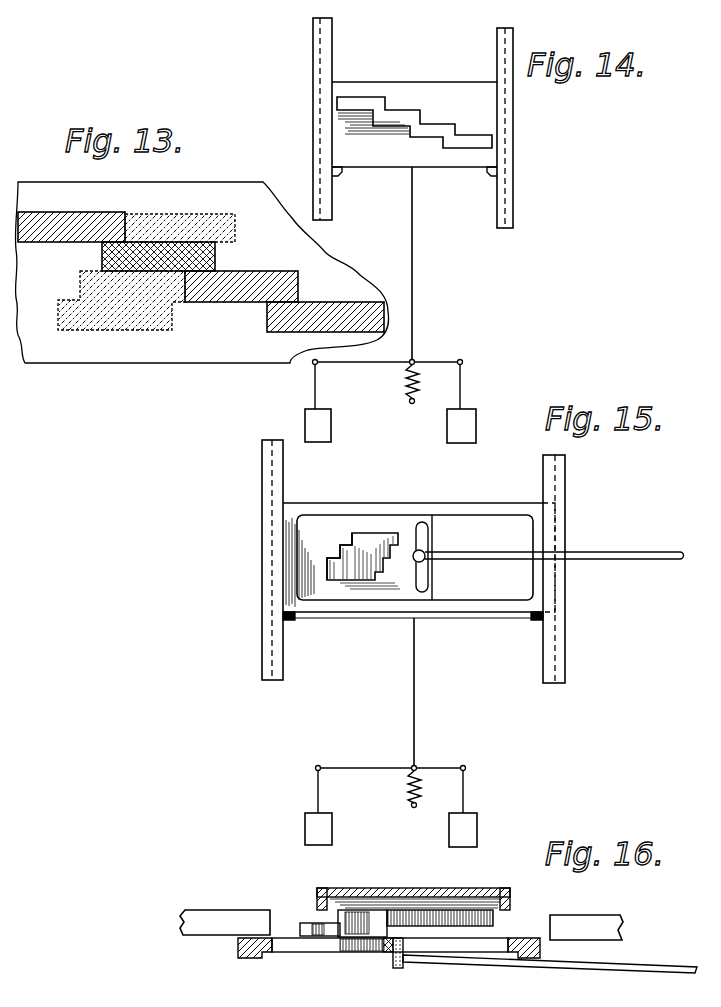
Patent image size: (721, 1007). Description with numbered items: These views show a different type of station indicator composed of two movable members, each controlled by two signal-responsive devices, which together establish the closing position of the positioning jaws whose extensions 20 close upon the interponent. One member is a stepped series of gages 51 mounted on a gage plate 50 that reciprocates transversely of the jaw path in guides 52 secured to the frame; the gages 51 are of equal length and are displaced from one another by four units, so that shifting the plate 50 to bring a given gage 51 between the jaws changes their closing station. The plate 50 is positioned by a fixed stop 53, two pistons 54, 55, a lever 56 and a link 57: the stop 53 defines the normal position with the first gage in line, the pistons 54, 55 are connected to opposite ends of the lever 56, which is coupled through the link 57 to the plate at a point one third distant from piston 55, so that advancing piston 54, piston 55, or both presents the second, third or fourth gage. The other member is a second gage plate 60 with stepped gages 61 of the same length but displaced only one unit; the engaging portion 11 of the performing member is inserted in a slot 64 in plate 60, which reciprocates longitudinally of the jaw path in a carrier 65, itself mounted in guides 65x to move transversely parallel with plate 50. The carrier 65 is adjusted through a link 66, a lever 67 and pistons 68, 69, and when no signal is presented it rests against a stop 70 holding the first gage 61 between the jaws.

In FIG. 15, the engaging portion 11 is at (430, 554).
In FIG. 16, the engaging portion 11 is at (391, 960).
In FIG. 16, the extensions of the positioning jaws 20 is at (224, 906).
In FIG. 14, the gage plate 50 is at (455, 78).
In FIG. 16, the gage plate 50 is at (480, 900).
In FIG. 13, the stepped gages 51 is at (283, 270).
In FIG. 14, the stepped gages 51 is at (412, 125).
In FIG. 16, the stepped gages 51 is at (488, 920).
In FIG. 14, the guides 52 is at (316, 58).
In FIG. 16, the guides 52 is at (315, 901).
In FIG. 14, the fixed stop 53 is at (338, 170).
In FIG. 14, the piston 54 is at (326, 432).
In FIG. 14, the piston 55 is at (465, 436).
In FIG. 14, the lever 56 is at (368, 364).
In FIG. 14, the link 57 is at (414, 290).
In FIG. 15, the second gage plate 60 is at (361, 555).
In FIG. 16, the second gage plate 60 is at (338, 948).
In FIG. 13, the stepped gages 61 is at (115, 331).
In FIG. 15, the stepped gages 61 is at (366, 552).
In FIG. 15, the guide or slot 64 is at (422, 584).
In FIG. 15, the carrier 65 is at (500, 508).
In FIG. 16, the carrier 65 is at (270, 952).
In FIG. 15, the guides 65x is at (585, 641).
In FIG. 16, the guides 65x is at (554, 951).
In FIG. 15, the link 66 is at (416, 702).
In FIG. 15, the lever 67 is at (368, 764).
In FIG. 15, the piston 68 is at (307, 828).
In FIG. 15, the piston 69 is at (478, 832).
In FIG. 15, the stop 70 is at (291, 620).